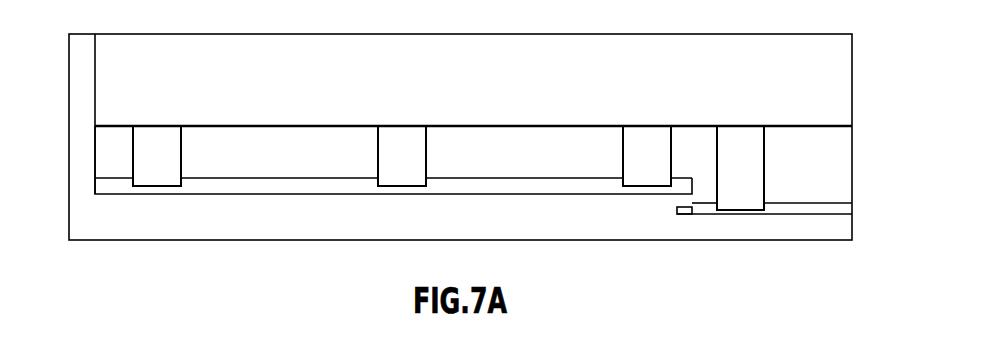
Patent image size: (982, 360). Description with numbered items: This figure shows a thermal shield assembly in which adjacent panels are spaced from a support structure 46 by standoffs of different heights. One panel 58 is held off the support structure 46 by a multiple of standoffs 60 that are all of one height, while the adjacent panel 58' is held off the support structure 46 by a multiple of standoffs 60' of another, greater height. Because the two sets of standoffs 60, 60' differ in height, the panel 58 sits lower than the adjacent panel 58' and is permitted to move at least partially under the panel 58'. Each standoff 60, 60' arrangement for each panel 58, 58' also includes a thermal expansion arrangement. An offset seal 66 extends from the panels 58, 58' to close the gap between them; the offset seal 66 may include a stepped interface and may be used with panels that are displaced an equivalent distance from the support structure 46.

The support structure 46 is at (283, 75).
The panel 58 is at (393, 205).
The adjacent panel 58' is at (764, 249).
The standoffs 60 is at (349, 156).
The standoffs 60' is at (777, 168).
The offset seal 66 is at (683, 214).